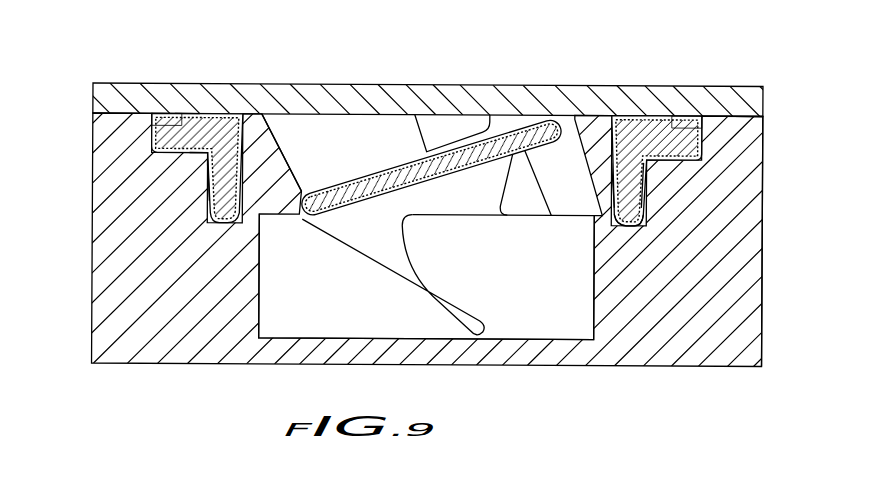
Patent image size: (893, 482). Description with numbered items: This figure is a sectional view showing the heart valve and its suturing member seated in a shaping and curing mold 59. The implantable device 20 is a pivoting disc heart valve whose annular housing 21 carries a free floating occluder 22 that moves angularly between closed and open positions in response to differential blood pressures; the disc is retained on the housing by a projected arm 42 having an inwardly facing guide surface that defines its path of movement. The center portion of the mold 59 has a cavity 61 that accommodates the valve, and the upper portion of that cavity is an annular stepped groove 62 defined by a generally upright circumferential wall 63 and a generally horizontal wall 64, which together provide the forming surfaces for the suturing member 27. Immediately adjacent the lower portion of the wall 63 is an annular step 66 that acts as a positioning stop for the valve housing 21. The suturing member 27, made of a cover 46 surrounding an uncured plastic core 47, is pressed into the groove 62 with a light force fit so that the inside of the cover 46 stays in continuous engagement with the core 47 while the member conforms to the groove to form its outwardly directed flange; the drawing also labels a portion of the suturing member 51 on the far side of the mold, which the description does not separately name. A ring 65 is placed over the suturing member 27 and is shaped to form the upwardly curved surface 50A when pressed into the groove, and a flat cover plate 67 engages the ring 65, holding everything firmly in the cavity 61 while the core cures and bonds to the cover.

The implantable device 20 is at (385, 163).
The annular housing 21 is at (312, 148).
The occluder 22 is at (510, 130).
The suturing member 27 is at (200, 115).
The arm 42 is at (435, 295).
The cover 46 is at (732, 118).
The plastic core 47 is at (658, 117).
The upwardly curved surface 50A is at (692, 117).
The seal leg 51 is at (637, 175).
The curing mold 59 is at (115, 275).
The cavity 61 is at (427, 277).
The annular stepped groove 62 is at (186, 112).
The upright circumferential wall 63 is at (210, 177).
The horizontal wall 64 is at (205, 152).
The ring 65 is at (160, 112).
The annular step 66 is at (622, 225).
The cover plate 67 is at (603, 97).